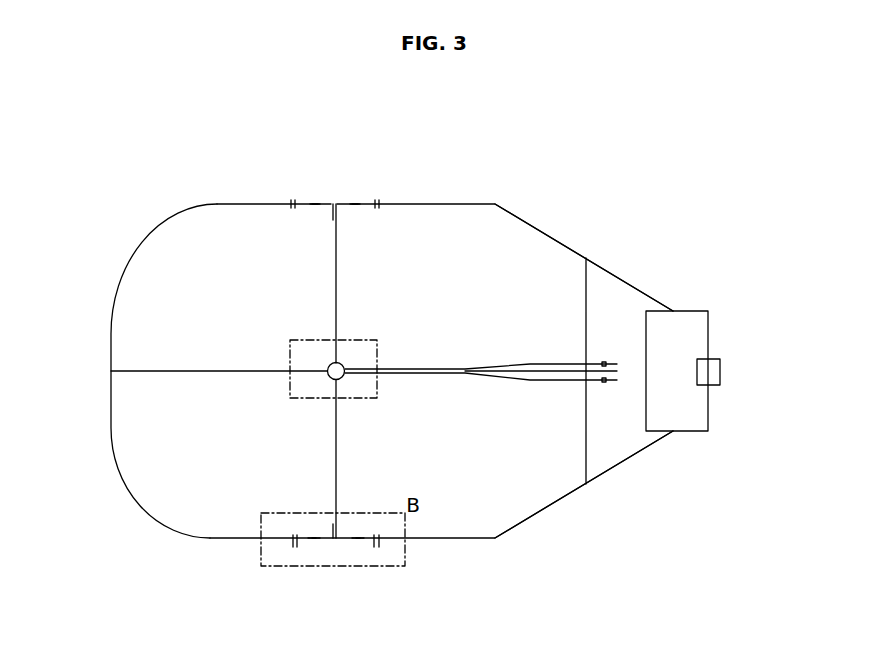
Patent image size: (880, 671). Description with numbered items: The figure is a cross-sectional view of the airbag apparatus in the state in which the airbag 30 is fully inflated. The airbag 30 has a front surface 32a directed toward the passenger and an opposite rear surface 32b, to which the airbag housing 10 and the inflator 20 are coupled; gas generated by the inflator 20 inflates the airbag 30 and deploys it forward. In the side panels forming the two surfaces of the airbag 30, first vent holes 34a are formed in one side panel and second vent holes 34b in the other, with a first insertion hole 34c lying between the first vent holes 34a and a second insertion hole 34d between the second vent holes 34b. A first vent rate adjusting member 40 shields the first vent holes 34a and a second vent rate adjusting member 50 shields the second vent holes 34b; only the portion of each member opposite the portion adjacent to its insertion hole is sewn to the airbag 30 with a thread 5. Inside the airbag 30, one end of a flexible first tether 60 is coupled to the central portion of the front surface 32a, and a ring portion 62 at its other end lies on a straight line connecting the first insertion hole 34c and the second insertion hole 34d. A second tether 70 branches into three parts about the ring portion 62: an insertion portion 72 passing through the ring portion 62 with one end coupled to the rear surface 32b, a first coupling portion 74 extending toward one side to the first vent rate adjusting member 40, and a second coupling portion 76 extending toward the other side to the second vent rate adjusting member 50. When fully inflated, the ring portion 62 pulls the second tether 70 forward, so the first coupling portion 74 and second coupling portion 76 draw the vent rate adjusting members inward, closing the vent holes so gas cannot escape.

The thread 5 is at (377, 547).
The airbag housing 10 is at (695, 328).
The inflator 20 is at (720, 369).
The airbag 30 is at (487, 190).
The front surface 32a is at (111, 330).
The rear surface 32b is at (607, 313).
The first vent hole 34a is at (352, 537).
The second vent hole 34b is at (357, 207).
The first insertion hole 34c is at (338, 526).
The second insertion hole 34d is at (341, 207).
The first vent rate adjusting member 40 is at (360, 547).
The second vent rate adjusting member 50 is at (352, 204).
The first tether 60 is at (152, 371).
The ring portion 62 is at (330, 364).
The second tether 70 is at (395, 354).
The insertion portion 72 is at (425, 375).
The first coupling portion 74 is at (338, 422).
The second coupling portion 76 is at (337, 297).